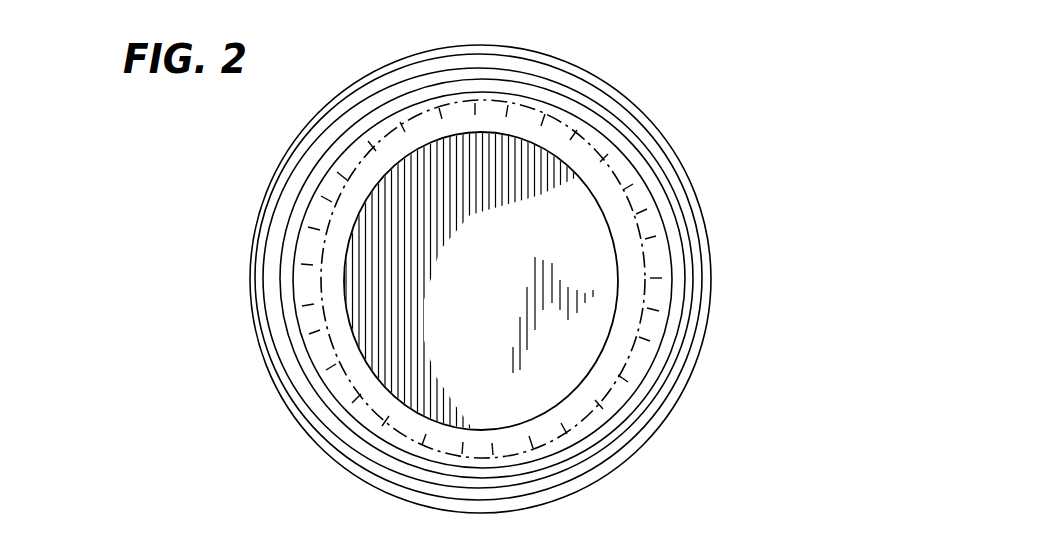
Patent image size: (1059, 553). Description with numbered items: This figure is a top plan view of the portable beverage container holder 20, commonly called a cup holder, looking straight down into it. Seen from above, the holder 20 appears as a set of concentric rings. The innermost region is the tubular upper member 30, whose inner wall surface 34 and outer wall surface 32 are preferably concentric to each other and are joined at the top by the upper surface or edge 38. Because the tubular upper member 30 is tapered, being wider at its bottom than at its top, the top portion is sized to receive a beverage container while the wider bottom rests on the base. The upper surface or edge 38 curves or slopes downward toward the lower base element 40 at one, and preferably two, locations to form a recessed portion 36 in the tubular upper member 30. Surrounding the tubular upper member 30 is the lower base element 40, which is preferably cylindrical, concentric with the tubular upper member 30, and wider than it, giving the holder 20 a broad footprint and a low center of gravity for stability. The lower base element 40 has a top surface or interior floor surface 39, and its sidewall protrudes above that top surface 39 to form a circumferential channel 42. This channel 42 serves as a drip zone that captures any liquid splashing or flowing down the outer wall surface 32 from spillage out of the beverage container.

The beverage container holder 20 is at (206, 349).
The tubular upper member 30 is at (619, 156).
The outer wall surface 32 is at (332, 373).
The inner wall surface 34 is at (574, 388).
The recessed portion 36 is at (490, 112).
The upper surface or edge 38 is at (633, 269).
The top surface or interior floor surface 39 is at (578, 231).
The lower base element 40 is at (632, 468).
The circumferential channel 42 is at (680, 232).